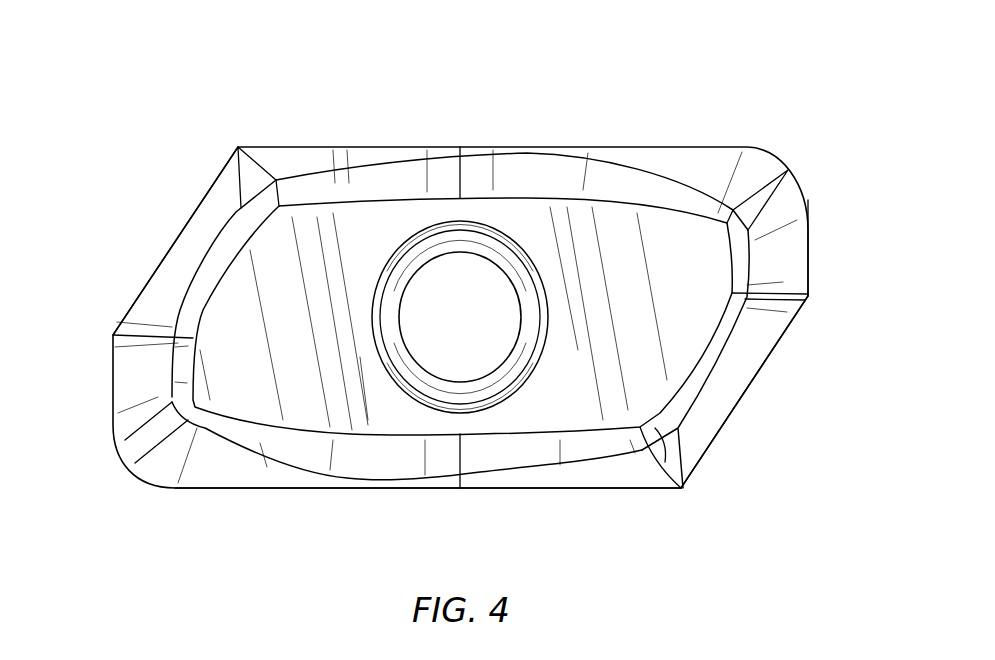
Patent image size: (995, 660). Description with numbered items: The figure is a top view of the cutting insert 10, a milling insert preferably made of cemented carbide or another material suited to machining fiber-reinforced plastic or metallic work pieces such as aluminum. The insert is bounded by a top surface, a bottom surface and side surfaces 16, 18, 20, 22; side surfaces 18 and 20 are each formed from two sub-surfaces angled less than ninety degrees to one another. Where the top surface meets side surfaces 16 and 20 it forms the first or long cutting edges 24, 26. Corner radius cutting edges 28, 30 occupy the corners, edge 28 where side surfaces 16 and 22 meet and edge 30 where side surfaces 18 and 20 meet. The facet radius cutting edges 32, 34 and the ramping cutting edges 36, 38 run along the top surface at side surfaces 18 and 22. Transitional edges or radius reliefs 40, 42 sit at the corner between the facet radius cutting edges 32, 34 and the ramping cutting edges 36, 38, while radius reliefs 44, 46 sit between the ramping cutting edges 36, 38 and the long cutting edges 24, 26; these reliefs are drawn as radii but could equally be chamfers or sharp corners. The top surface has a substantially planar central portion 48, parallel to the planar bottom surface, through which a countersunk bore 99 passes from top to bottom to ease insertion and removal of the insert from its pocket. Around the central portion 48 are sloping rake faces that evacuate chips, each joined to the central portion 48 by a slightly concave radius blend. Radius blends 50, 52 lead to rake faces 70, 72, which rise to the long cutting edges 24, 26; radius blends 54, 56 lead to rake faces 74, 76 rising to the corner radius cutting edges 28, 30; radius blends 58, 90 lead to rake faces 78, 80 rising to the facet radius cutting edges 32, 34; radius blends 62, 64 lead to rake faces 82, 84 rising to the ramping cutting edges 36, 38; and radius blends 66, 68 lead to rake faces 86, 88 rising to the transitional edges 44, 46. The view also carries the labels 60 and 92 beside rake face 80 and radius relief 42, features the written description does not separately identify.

The cutting insert 10 is at (828, 98).
The side surface 16 is at (413, 492).
The side surface 18 is at (790, 352).
The side surface 20 is at (556, 124).
The side surface 22 is at (120, 303).
The long cutting edge 24 is at (325, 488).
The long cutting edge 26 is at (443, 146).
The corner radius cutting edge 28 is at (135, 478).
The corner radius cutting edge 30 is at (788, 170).
The facet radius cutting edge 32 is at (138, 387).
The facet radius cutting edge 34 is at (810, 214).
The ramping cutting edge 36 is at (173, 243).
The ramping cutting edge 38 is at (718, 437).
The transitional edge 40 is at (115, 334).
The transitional edge 42 is at (807, 298).
The transitional edge 44 is at (237, 146).
The transitional edge 46 is at (682, 489).
The central portion 48 is at (366, 215).
The radius blend 50 is at (518, 460).
The radius blend 52 is at (331, 180).
The radius blend 54 is at (155, 434).
The radius blend 56 is at (730, 210).
The radius blend 58 is at (180, 368).
The corner facet 60 is at (741, 258).
The radius blend 62 is at (197, 295).
The radius blend 64 is at (702, 380).
The radius blend 66 is at (263, 210).
The radius blend 68 is at (662, 467).
The rake face 70 is at (597, 477).
The rake face 72 is at (298, 158).
The rake face 74 is at (125, 440).
The rake face 76 is at (758, 185).
The rake face 78 is at (142, 358).
The rake face 80 is at (790, 238).
The rake face 82 is at (202, 228).
The rake face 84 is at (748, 365).
The rake face 86 is at (243, 173).
The rake face 88 is at (677, 465).
The radius blend 90 is at (125, 340).
The edge 92 is at (783, 295).
The countersunk bore 99 is at (472, 256).